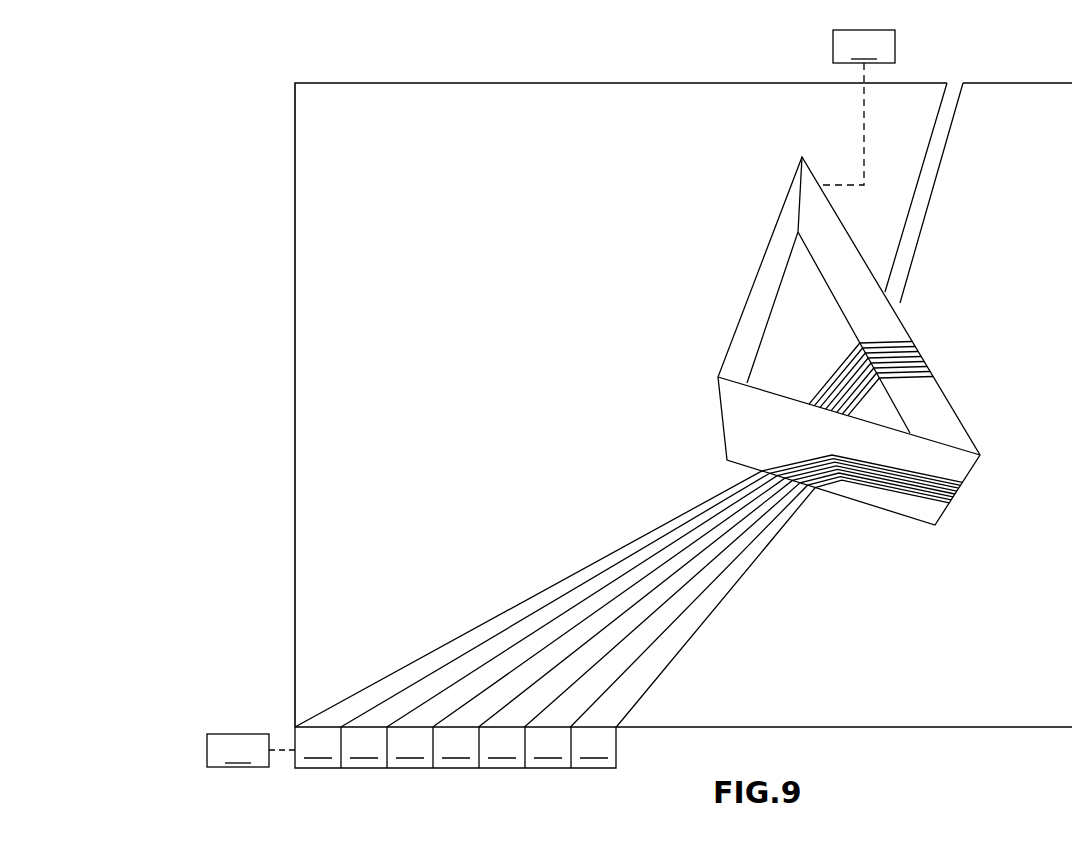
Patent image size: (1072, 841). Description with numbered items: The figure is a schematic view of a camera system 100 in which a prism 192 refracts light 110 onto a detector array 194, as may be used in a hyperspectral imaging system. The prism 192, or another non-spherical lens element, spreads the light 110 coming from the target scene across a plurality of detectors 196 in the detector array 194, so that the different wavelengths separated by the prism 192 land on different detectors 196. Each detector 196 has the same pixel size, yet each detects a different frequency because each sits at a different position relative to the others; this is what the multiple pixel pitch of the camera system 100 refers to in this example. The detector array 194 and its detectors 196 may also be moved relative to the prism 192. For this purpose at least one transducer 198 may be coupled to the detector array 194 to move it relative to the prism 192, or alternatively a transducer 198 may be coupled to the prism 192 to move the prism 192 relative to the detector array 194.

The camera system 100 is at (278, 162).
The light 110 is at (953, 92).
The prism 192 is at (798, 213).
The detector array 194 is at (616, 757).
The detectors 196 is at (628, 607).
The transducer 198 is at (551, 398).